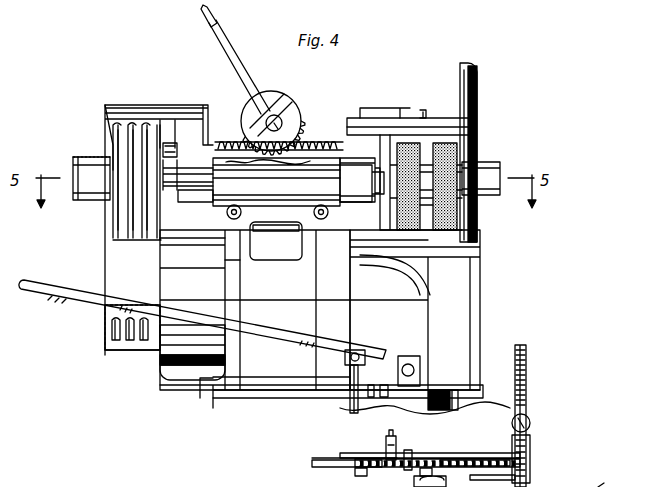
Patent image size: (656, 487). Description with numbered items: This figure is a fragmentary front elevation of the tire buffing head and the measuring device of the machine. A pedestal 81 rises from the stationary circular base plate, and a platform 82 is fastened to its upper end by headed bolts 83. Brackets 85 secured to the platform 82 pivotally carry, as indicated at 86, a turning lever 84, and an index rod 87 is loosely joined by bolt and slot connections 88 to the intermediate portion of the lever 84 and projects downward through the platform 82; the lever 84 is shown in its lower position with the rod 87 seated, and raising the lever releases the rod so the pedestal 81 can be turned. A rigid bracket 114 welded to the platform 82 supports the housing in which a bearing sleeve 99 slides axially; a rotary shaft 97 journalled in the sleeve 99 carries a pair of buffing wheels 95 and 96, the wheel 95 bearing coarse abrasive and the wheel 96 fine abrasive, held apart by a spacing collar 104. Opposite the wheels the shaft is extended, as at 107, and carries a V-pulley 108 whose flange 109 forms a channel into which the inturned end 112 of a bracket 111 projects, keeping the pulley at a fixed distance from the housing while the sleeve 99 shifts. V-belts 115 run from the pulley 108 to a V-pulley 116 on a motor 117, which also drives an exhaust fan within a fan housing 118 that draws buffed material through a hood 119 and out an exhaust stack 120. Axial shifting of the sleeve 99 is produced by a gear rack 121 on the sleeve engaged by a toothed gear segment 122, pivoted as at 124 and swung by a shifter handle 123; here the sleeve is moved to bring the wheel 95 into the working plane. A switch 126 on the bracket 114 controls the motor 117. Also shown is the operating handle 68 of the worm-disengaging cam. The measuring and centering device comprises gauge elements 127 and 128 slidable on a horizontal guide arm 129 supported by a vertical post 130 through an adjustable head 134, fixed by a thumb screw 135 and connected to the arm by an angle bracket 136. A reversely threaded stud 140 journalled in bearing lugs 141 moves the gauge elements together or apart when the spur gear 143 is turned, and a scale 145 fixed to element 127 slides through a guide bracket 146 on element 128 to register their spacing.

The operating handle 68 is at (609, 475).
The pedestal 81 is at (446, 406).
The platform 82 is at (462, 395).
The headed bolts 83 is at (386, 398).
The turning lever 84 is at (284, 342).
The brackets 85 is at (418, 363).
The pivot 86 is at (410, 364).
The index rod 87 is at (346, 410).
The bolt and slot connections 88 is at (353, 352).
The buffing wheel 95 is at (405, 142).
The buffing wheel 96 is at (476, 142).
The rotary shaft 97 is at (374, 159).
The bearing sleeve 99 is at (342, 157).
The spacing collar 104 is at (436, 175).
The shaft extension 107 is at (200, 168).
The V-pulley 108 is at (120, 192).
The flange 109 is at (171, 145).
The bracket 111 is at (204, 196).
The inturned end 112 is at (167, 144).
The rigid bracket 114 is at (294, 310).
The V-belts 115 is at (156, 212).
The V-pulley 116 is at (116, 340).
The motor 117 is at (184, 375).
The fan housing 118 is at (466, 282).
The hood 119 is at (440, 125).
The exhaust stack 120 is at (474, 78).
The gear rack 121 is at (312, 140).
The toothed gear segment 122 is at (290, 102).
The shifter handle 123 is at (230, 34).
The pivot 124 is at (268, 117).
The switch 126 is at (286, 254).
The gauge element 127 is at (360, 472).
The gauge element 128 is at (412, 472).
The guide arm 129 is at (312, 462).
The post 130 is at (524, 384).
The adjustable head 134 is at (526, 448).
The thumb screw 135 is at (528, 424).
The angle bracket 136 is at (502, 450).
The stud 140 is at (345, 451).
The bearing lugs 141 is at (408, 454).
The spur gear 143 is at (392, 437).
The scale 145 is at (460, 463).
The guide bracket 146 is at (424, 469).